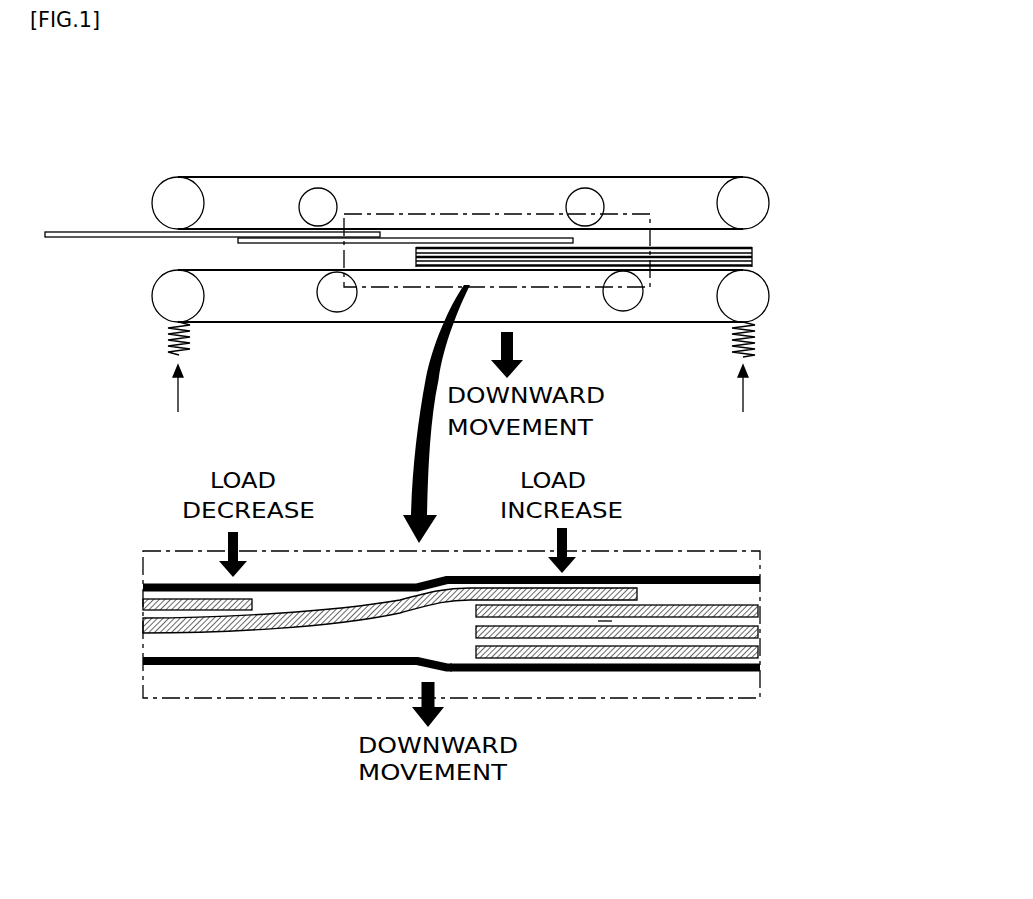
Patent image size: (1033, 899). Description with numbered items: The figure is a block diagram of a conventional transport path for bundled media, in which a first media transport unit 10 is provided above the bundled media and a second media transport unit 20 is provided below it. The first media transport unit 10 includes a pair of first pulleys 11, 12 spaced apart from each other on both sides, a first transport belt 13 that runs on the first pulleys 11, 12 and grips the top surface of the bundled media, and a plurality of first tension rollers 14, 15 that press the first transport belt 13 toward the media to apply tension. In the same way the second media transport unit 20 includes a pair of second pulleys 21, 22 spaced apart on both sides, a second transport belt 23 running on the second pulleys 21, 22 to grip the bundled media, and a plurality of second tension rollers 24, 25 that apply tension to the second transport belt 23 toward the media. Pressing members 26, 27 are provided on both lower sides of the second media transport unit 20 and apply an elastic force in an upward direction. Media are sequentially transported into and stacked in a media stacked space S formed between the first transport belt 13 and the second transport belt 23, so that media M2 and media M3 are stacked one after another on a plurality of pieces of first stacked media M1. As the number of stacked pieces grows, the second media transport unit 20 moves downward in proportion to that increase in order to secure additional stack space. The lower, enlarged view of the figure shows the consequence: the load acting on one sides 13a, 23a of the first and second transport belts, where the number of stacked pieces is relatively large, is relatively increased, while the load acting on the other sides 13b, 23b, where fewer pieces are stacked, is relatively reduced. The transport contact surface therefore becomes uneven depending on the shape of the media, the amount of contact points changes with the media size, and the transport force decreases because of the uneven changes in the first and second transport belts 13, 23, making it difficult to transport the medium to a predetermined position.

The first media transport unit 10 is at (458, 149).
The first pulley 11 is at (743, 203).
The first pulley 12 is at (178, 203).
The first transport belt 13 is at (455, 177).
The one side of the first transport belt 13a is at (688, 575).
The other side of the first transport belt 13b is at (183, 583).
The first tension roller 14 is at (585, 205).
The first tension roller 15 is at (318, 205).
The second media transport unit 20 is at (454, 360).
The second pulley 21 is at (743, 296).
The second pulley 22 is at (155, 298).
The second transport belt 23 is at (389, 323).
The one side of the second transport belt 23a is at (667, 672).
The other side of the second transport belt 23b is at (182, 668).
The second tension roller 24 is at (628, 298).
The second tension roller 25 is at (337, 292).
The pressing member 26 is at (755, 342).
The pressing member 27 is at (168, 337).
The first stacked media M1 is at (702, 250).
The media M2 is at (398, 238).
The media M3 is at (75, 238).
The media stacked space S is at (600, 622).